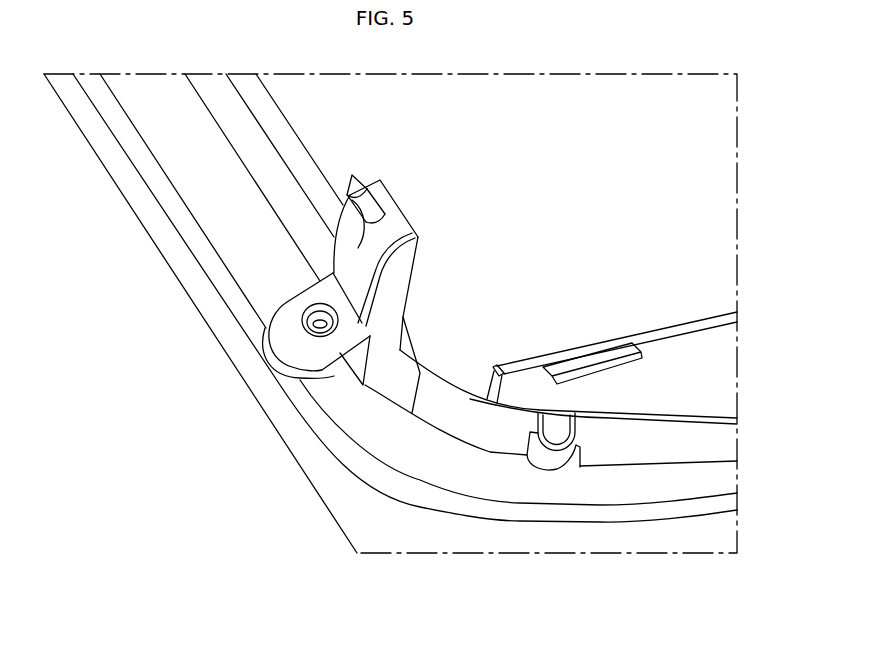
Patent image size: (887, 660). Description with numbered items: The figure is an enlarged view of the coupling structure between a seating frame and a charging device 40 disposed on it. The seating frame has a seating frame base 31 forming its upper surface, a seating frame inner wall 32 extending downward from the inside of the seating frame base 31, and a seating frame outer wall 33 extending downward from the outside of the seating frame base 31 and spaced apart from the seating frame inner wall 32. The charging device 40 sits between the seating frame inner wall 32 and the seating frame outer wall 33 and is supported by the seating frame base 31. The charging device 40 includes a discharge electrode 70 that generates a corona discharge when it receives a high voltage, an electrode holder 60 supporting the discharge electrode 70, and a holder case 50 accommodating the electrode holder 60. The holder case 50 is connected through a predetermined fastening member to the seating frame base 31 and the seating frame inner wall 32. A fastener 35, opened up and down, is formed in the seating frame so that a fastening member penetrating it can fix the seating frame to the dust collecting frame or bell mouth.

The seating frame base 31 is at (670, 483).
The seating frame inner wall 32 is at (253, 142).
The seating frame outer wall 33 is at (190, 232).
The fastener 35 is at (547, 463).
The charging device 40 is at (515, 265).
The holder case 50 is at (393, 282).
The electrode holder 60 is at (363, 243).
The discharge electrode 70 is at (373, 207).